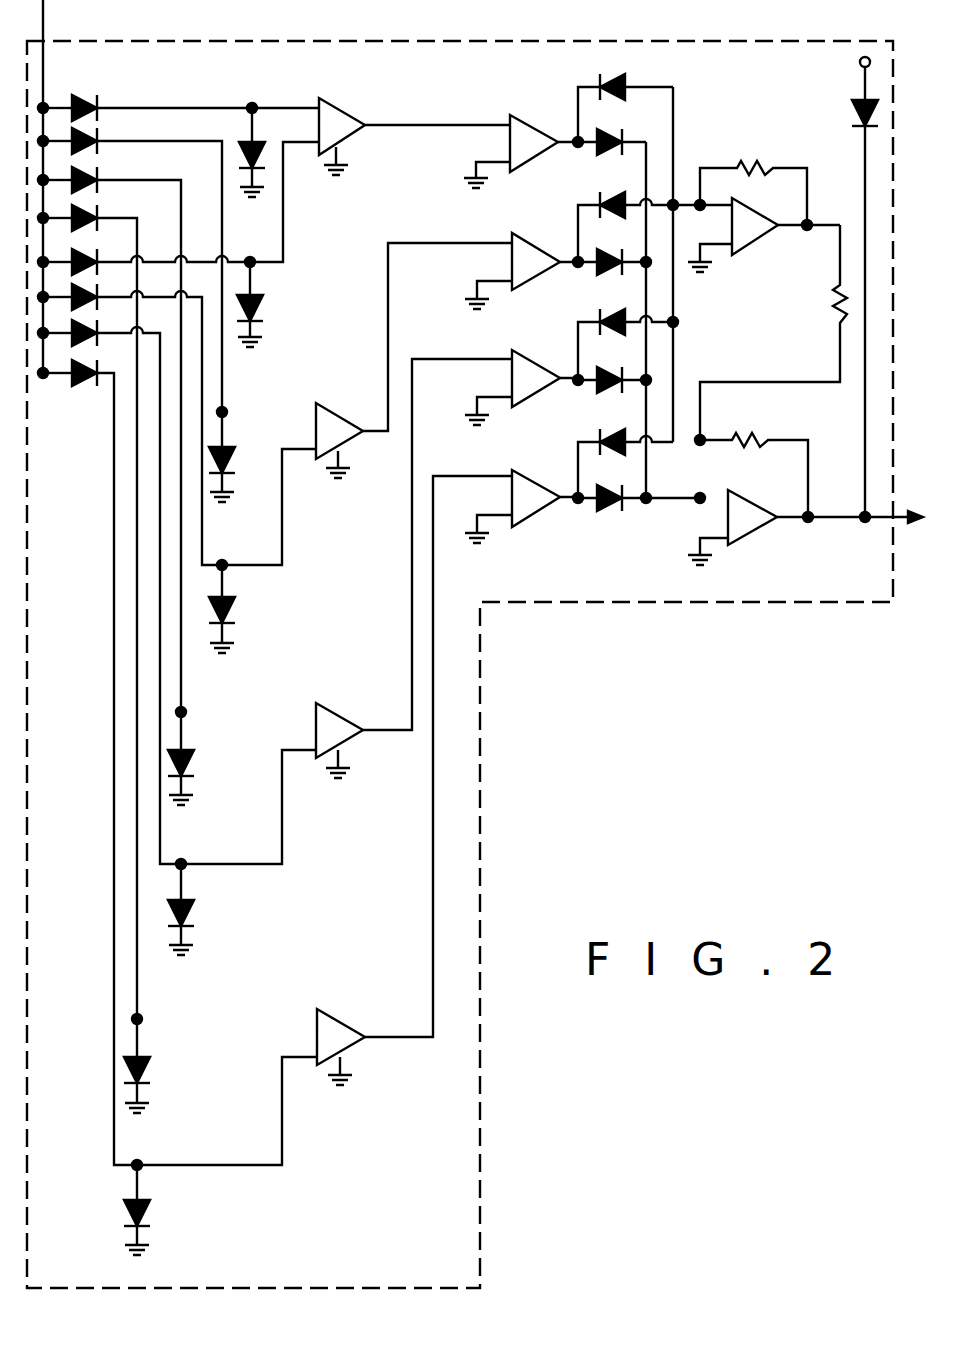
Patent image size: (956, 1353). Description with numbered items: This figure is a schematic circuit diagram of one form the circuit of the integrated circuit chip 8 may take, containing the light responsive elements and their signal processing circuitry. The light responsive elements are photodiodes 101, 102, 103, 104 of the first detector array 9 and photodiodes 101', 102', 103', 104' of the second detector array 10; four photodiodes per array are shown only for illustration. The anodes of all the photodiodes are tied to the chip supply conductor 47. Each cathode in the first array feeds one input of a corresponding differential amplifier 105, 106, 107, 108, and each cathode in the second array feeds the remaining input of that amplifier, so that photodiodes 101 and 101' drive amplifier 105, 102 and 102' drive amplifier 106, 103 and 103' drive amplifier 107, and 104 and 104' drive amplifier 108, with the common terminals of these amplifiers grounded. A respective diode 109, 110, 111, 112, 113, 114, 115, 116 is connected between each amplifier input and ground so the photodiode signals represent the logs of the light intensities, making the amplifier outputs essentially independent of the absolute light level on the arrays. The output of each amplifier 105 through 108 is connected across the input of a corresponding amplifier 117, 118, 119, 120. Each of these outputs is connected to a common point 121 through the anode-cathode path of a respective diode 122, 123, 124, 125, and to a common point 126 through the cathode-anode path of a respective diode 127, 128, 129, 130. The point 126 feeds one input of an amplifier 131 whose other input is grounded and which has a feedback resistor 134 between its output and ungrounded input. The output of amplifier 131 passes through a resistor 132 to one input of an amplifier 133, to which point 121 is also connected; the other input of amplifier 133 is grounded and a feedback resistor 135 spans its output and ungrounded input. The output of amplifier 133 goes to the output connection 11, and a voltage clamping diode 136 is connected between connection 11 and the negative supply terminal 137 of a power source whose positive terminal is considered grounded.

The integrated circuit chip 8 is at (425, 1290).
The first detector array 9 is at (150, 90).
The second detector array 10 is at (72, 410).
The output connection 11 is at (900, 522).
The chip supply conductor 47 is at (45, 18).
The photodiode 101 is at (178, 92).
The photodiode 102 is at (130, 264).
The photodiode 103 is at (109, 433).
The photodiode 104 is at (89, 606).
The photodiode 101' is at (178, 208).
The photodiode 102' is at (177, 418).
The photodiode 103' is at (177, 587).
The photodiode 104' is at (177, 757).
The differential amplifier 105 is at (345, 105).
The differential amplifier 106 is at (340, 410).
The differential amplifier 107 is at (340, 710).
The differential amplifier 108 is at (341, 1016).
The diode 109 is at (254, 145).
The diode 110 is at (263, 306).
The diode 111 is at (230, 450).
The diode 112 is at (236, 608).
The diode 113 is at (195, 760).
The diode 114 is at (195, 910).
The diode 115 is at (151, 1068).
The diode 116 is at (151, 1210).
The amplifier 117 is at (525, 118).
The amplifier 118 is at (527, 238).
The amplifier 119 is at (527, 355).
The amplifier 120 is at (527, 476).
The common point 121 is at (648, 505).
The diode 122 is at (598, 156).
The diode 123 is at (598, 276).
The diode 124 is at (598, 394).
The diode 125 is at (597, 512).
The common point 126 is at (675, 200).
The diode 127 is at (622, 82).
The diode 128 is at (610, 198).
The diode 129 is at (610, 315).
The diode 130 is at (610, 435).
The amplifier 131 is at (760, 242).
The resistor 132 is at (836, 312).
The amplifier 133 is at (758, 532).
The feedback resistor 134 is at (752, 162).
The feedback resistor 135 is at (748, 432).
The voltage clamping diode 136 is at (852, 114).
The negative supply terminal 137 is at (866, 56).